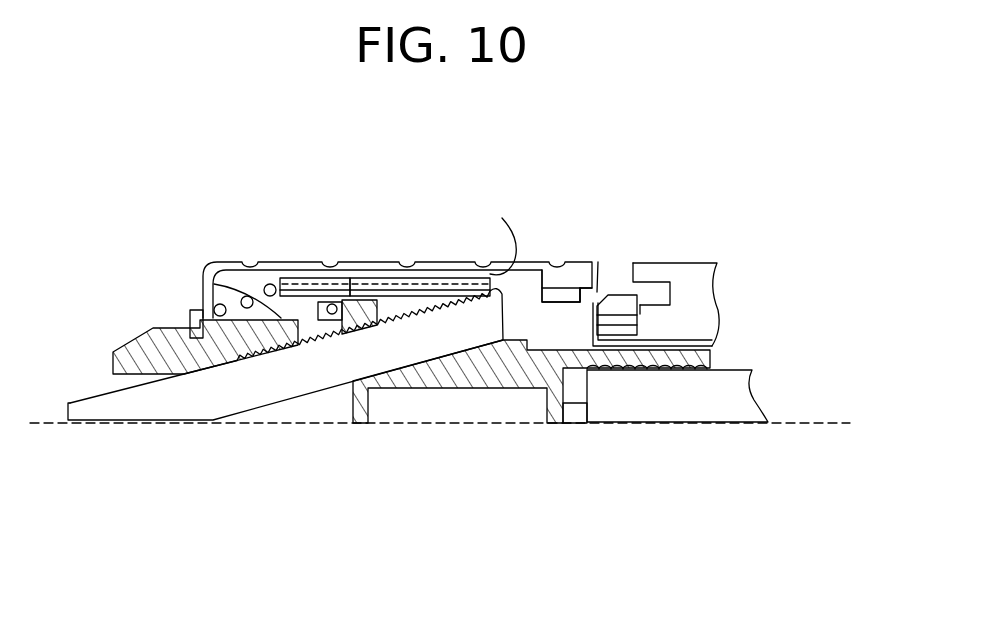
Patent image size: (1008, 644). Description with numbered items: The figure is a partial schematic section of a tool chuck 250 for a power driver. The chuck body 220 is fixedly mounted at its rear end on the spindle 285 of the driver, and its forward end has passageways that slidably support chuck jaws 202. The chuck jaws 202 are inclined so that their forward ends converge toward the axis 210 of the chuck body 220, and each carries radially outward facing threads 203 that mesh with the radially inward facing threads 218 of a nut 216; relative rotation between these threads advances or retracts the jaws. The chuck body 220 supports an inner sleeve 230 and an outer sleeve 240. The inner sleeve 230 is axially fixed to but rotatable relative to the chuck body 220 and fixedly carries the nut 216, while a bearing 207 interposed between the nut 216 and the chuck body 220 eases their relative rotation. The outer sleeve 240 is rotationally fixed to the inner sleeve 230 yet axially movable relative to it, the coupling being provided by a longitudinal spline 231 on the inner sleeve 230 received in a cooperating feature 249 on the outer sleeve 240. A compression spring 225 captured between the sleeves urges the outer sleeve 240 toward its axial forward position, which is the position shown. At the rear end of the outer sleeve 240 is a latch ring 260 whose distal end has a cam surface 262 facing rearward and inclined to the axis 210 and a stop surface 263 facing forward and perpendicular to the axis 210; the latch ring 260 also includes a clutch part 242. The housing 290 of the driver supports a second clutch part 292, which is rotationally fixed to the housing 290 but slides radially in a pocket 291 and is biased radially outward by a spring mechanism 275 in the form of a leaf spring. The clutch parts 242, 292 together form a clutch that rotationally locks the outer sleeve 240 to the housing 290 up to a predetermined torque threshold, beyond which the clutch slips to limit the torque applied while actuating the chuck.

The chuck jaws 202 is at (93, 398).
The radially outward facing threads 203 is at (313, 328).
The bearing 207 is at (283, 288).
The axis 210 is at (110, 425).
The nut 216 is at (248, 282).
The radially inward facing threads 218 is at (313, 328).
The chuck body 220 is at (452, 390).
The compression spring 225 is at (216, 291).
The inner sleeve 230 is at (298, 282).
The longitudinal spline 231 is at (383, 282).
The outer sleeve 240 is at (542, 268).
The clutch part 242 is at (558, 304).
The cooperating feature 249 is at (495, 231).
The tool chuck 250 is at (436, 171).
The latch ring 260 is at (600, 292).
The cam surface 262 is at (612, 294).
The stop surface 263 is at (582, 302).
The spring mechanism 275 is at (606, 326).
The spindle 285 is at (745, 362).
The housing 290 is at (718, 273).
The pocket 291 is at (640, 327).
The clutch part 292 is at (624, 278).